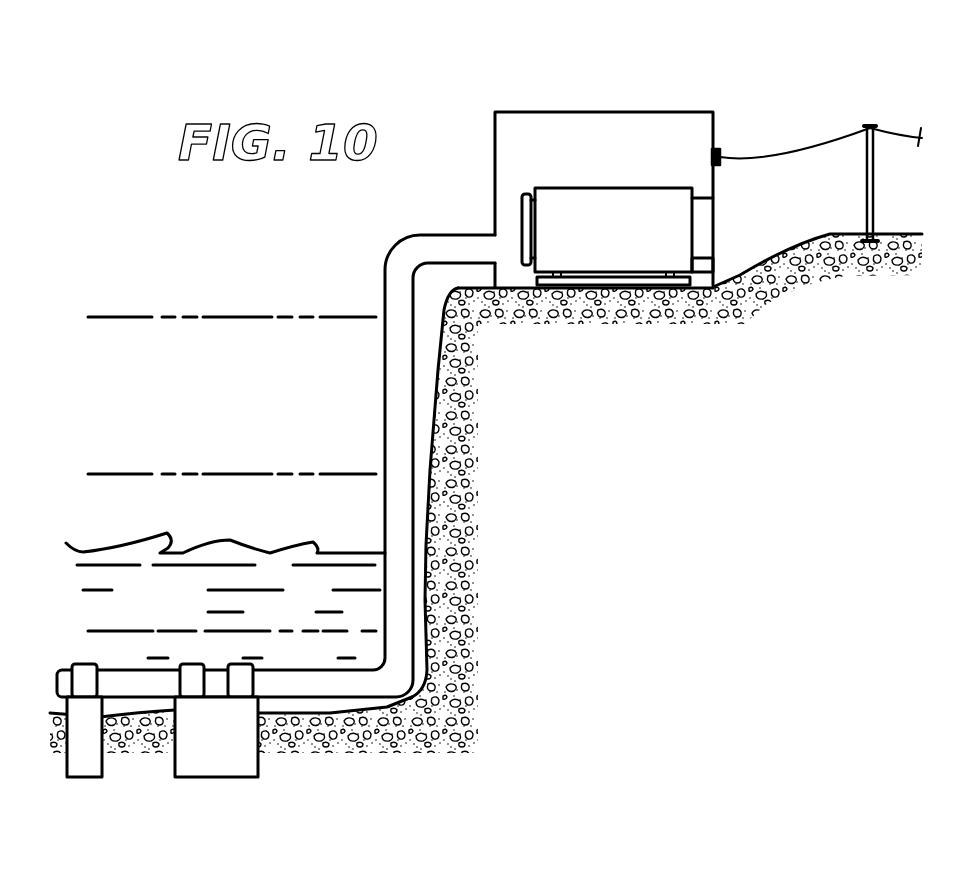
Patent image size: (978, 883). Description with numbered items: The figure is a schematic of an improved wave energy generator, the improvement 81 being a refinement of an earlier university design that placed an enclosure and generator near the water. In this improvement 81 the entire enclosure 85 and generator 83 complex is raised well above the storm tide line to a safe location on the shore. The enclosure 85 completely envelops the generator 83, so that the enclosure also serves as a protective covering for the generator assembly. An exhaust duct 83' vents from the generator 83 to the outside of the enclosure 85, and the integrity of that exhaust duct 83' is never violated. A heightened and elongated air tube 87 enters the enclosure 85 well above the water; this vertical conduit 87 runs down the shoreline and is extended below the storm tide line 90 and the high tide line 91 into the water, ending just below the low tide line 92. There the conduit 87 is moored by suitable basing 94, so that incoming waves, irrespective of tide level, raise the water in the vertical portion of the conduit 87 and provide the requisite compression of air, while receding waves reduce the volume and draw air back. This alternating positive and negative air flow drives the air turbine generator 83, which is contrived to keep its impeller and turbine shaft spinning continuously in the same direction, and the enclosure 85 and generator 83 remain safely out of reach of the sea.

The improvement 81 is at (750, 100).
The enclosure 85 is at (599, 127).
The generator 83 is at (607, 236).
The exhaust duct 83' is at (682, 196).
The air tube 87 is at (405, 363).
The storm tide line 90 is at (141, 315).
The high tide line 91 is at (141, 472).
The low tide line 92 is at (141, 630).
The basing 94 is at (82, 758).